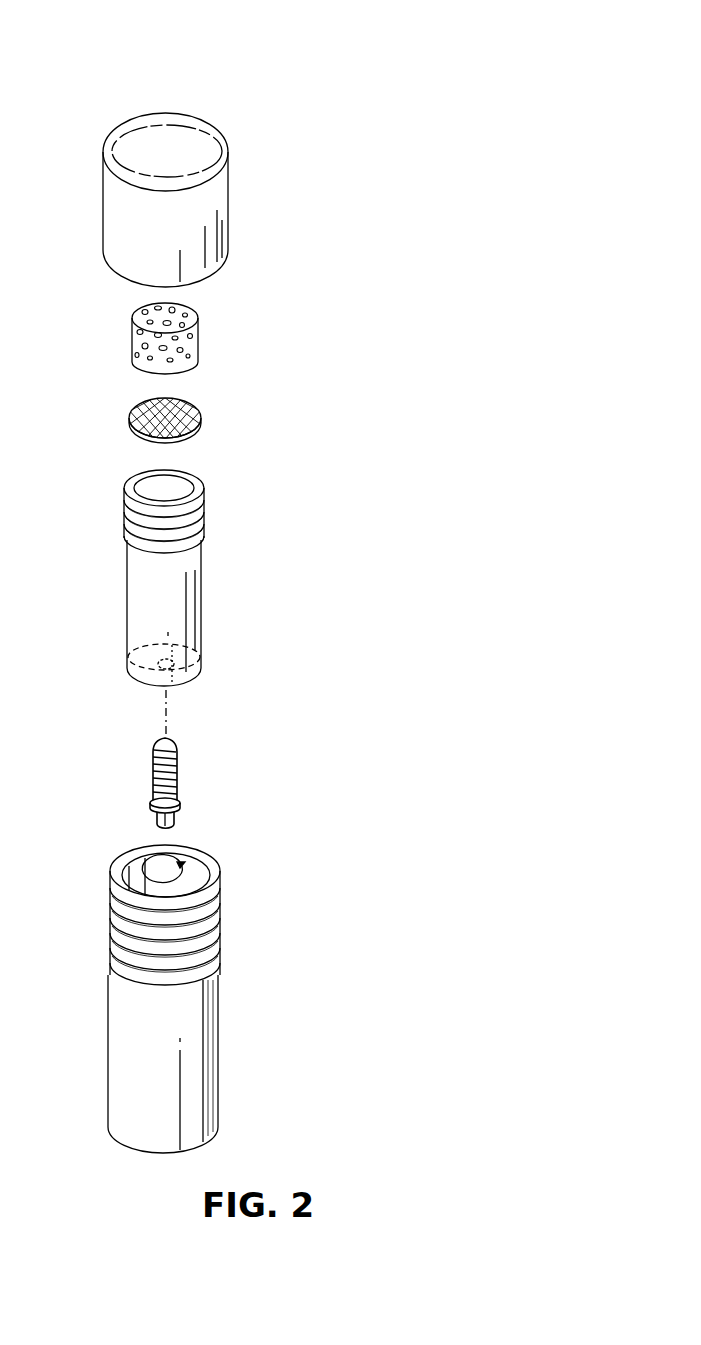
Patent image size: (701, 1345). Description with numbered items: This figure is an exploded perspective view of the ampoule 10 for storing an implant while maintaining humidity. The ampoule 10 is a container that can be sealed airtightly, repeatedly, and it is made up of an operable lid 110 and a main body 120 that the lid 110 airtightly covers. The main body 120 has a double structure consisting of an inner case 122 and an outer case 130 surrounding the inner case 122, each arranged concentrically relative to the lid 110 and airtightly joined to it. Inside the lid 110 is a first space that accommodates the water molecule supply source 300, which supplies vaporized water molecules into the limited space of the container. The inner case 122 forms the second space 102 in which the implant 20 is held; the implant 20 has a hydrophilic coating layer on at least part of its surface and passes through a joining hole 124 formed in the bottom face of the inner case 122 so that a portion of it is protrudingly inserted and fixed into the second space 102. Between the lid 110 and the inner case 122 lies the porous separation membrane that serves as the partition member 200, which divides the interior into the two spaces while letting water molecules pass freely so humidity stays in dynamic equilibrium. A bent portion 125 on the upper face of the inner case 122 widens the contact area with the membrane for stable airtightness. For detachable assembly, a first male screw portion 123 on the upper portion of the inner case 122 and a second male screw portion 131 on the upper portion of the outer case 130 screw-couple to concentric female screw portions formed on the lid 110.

The ampoule 10 is at (234, 96).
The lid 110 is at (222, 206).
The water molecule supply source 300 is at (196, 342).
The partition member 200 is at (200, 410).
The bent portion 125 is at (198, 484).
The first male screw portion 123 is at (206, 506).
The inner case 122 is at (216, 599).
The second space 102 is at (172, 600).
The joining hole 124 is at (200, 662).
The implant 20 is at (193, 762).
The second male screw portion 131 is at (223, 904).
The outer case 130 is at (224, 999).
The main body 120 is at (349, 1098).